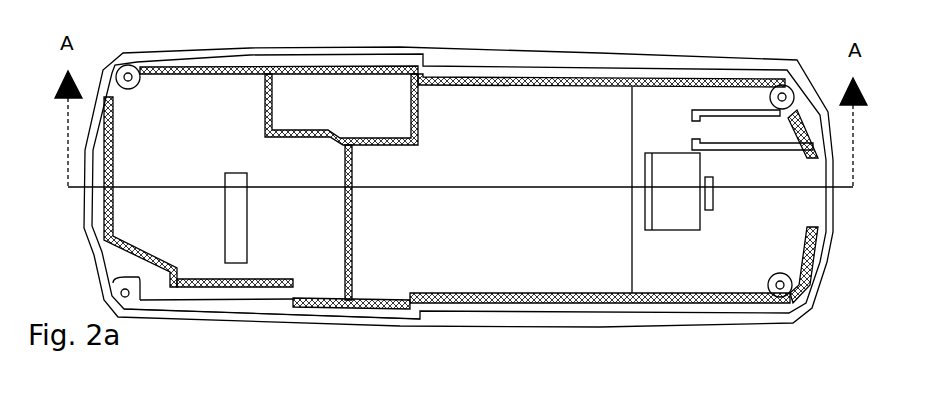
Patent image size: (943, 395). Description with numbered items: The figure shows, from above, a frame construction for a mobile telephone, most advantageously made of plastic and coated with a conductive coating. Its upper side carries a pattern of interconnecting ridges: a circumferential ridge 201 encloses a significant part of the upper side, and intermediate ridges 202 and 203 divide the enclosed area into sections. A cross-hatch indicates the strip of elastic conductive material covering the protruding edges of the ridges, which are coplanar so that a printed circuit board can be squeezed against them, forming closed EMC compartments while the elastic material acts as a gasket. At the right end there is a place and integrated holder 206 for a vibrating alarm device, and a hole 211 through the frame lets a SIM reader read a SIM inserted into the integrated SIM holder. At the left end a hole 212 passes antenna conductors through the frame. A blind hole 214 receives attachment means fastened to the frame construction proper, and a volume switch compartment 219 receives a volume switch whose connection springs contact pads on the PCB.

The circumferential ridge 201 is at (722, 303).
The intermediate ridge 202 is at (400, 145).
The intermediate ridge 203 is at (347, 257).
The integrated holder 206 is at (707, 125).
The hole 211 is at (677, 207).
The hole 212 is at (158, 280).
The blind hole 214 is at (782, 88).
The volume switch compartment 219 is at (250, 300).